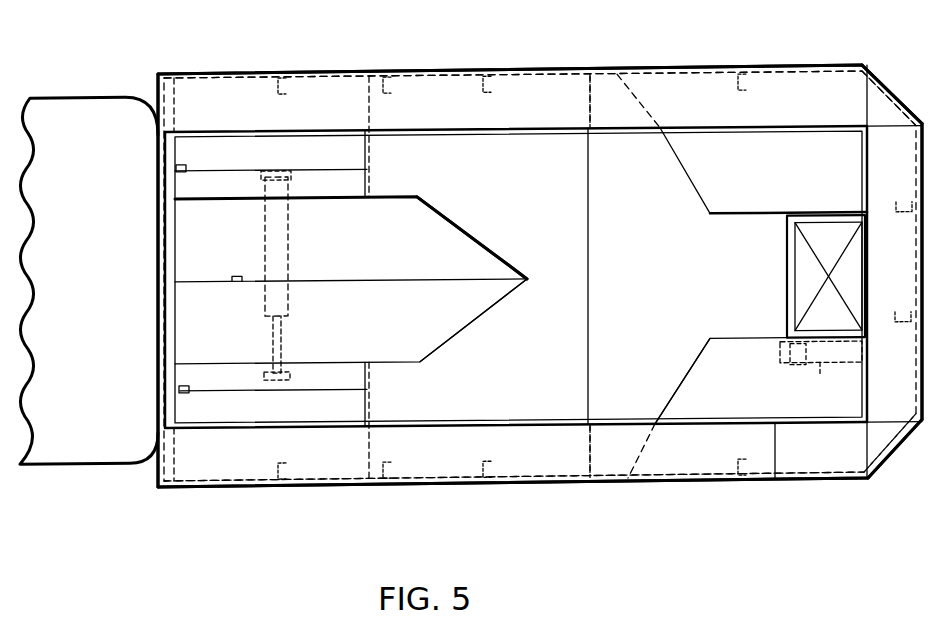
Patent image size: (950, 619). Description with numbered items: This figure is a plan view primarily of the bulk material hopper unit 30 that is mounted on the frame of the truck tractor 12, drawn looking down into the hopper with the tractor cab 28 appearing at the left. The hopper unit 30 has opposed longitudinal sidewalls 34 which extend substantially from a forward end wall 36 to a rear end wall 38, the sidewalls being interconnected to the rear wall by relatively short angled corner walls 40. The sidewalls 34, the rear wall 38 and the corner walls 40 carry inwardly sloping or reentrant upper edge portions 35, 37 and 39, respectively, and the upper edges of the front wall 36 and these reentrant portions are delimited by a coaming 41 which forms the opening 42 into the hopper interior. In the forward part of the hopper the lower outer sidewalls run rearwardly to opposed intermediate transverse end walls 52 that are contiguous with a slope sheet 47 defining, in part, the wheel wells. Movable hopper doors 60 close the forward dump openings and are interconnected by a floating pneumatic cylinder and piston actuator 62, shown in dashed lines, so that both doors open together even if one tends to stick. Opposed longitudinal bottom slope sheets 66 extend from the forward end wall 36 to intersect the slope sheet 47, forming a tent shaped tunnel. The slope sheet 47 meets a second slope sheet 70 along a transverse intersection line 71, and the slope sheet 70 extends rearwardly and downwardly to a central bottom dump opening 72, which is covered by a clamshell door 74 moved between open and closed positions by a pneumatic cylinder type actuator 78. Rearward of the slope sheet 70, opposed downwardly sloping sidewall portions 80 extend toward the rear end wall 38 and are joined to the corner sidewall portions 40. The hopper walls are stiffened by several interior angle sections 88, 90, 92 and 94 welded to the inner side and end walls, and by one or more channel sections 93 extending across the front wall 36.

The truck tractor 12 is at (152, 63).
The cab 28 is at (108, 447).
The hopper unit 30 is at (344, 66).
The longitudinal sidewalls 34 is at (398, 72).
The reentrant upper edge portions of sidewalls 35 is at (646, 85).
The forward end wall 36 is at (162, 330).
The reentrant upper edge portion of rear wall 37 is at (906, 290).
The rear end wall 38 is at (924, 378).
The reentrant upper edge portions of corner walls 39 is at (873, 100).
The corner walls 40 is at (903, 107).
The coaming 41 is at (775, 478).
The opening 42 is at (698, 420).
The slope sheet 47 is at (540, 234).
The intermediate transverse end walls 52 is at (367, 180).
The hopper doors 60 is at (323, 187).
The pneumatic cylinder and piston actuator 62 is at (288, 264).
The bottom slope sheets 66 is at (440, 242).
The second slope sheet 70 is at (610, 294).
The transverse intersection line 71 is at (588, 359).
The central bottom dump opening 72 is at (795, 272).
The clamshell door 74 is at (825, 233).
The pneumatic cylinder type actuator 78 is at (821, 370).
The downwardly sloping sidewall portions 80 is at (700, 172).
The interior angle sections 88 is at (472, 81).
The interior angle sections 90 is at (186, 167).
The interior angle sections 92 is at (216, 278).
The channel sections 93 is at (172, 349).
The interior angle sections 94 is at (580, 98).